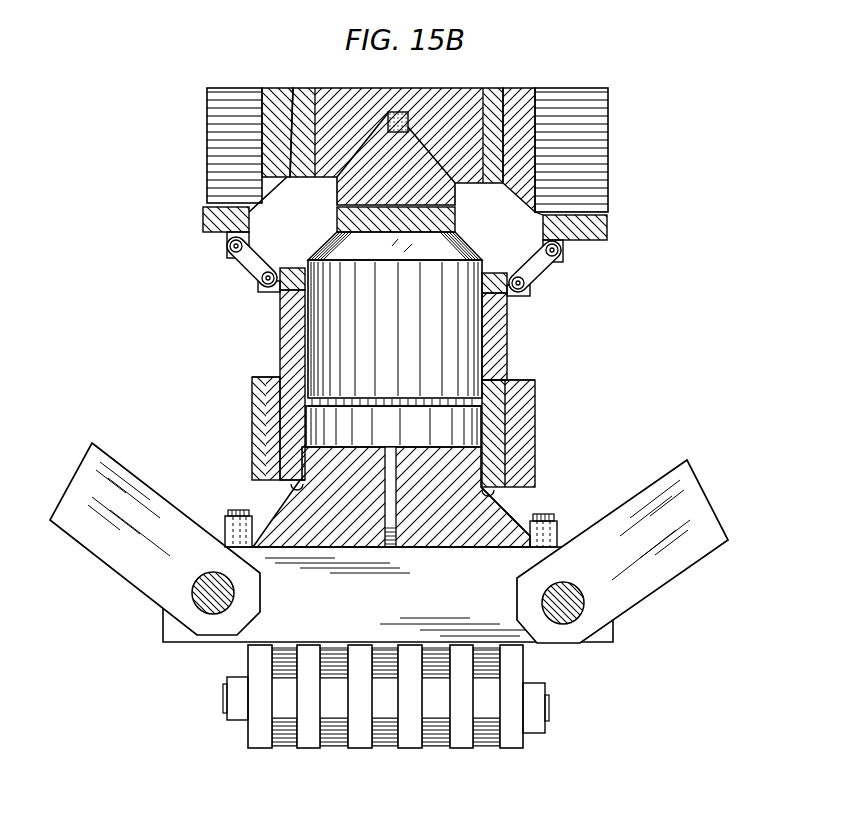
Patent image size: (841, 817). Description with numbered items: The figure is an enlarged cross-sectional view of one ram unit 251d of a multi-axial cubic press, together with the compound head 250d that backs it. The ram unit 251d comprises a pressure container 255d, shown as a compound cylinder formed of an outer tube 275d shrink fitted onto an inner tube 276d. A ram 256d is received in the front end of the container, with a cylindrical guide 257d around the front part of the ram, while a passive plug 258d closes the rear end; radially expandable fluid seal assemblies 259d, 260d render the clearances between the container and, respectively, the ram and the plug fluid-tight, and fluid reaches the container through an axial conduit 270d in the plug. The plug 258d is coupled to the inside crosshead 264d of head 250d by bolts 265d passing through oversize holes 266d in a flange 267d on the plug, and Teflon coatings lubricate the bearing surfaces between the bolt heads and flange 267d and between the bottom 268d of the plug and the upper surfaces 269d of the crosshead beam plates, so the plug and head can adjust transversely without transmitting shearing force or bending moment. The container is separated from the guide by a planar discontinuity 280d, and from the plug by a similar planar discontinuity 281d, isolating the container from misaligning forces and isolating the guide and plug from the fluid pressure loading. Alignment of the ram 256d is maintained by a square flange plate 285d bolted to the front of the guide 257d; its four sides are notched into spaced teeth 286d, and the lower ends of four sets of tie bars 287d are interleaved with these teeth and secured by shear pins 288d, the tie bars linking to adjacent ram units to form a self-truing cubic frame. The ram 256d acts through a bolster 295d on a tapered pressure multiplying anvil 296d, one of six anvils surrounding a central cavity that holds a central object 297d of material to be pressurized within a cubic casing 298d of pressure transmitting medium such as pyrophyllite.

The compound head 250d is at (548, 750).
The ram unit 251d is at (222, 450).
The pressure container 255d is at (537, 430).
The ram 256d is at (496, 320).
The cylindrical guide 257d is at (300, 316).
The plug 258d is at (512, 518).
The fluid seal assembly 259d is at (507, 465).
The fluid seal assembly 260d is at (534, 390).
The inside crosshead 264d is at (412, 612).
The bolts 265d is at (243, 503).
The holes 266d is at (389, 543).
The flange 267d is at (222, 532).
The bottom of the plug 268d is at (432, 552).
The upper surfaces of the beam plates 269d is at (486, 548).
The axial conduit 270d is at (400, 452).
The outer tube 275d is at (252, 414).
The inner tube 276d is at (286, 382).
The planar discontinuity 280d is at (298, 378).
The planar discontinuity 281d is at (295, 486).
The flange plate 285d is at (297, 276).
The teeth 286d is at (259, 289).
The tie bars 287d is at (249, 264).
The shear pins 288d is at (246, 246).
The bolster 295d is at (373, 228).
The tapered pressure multiplying anvil 296d is at (420, 189).
The central object 297d is at (402, 110).
The cubic casing 298d is at (386, 118).